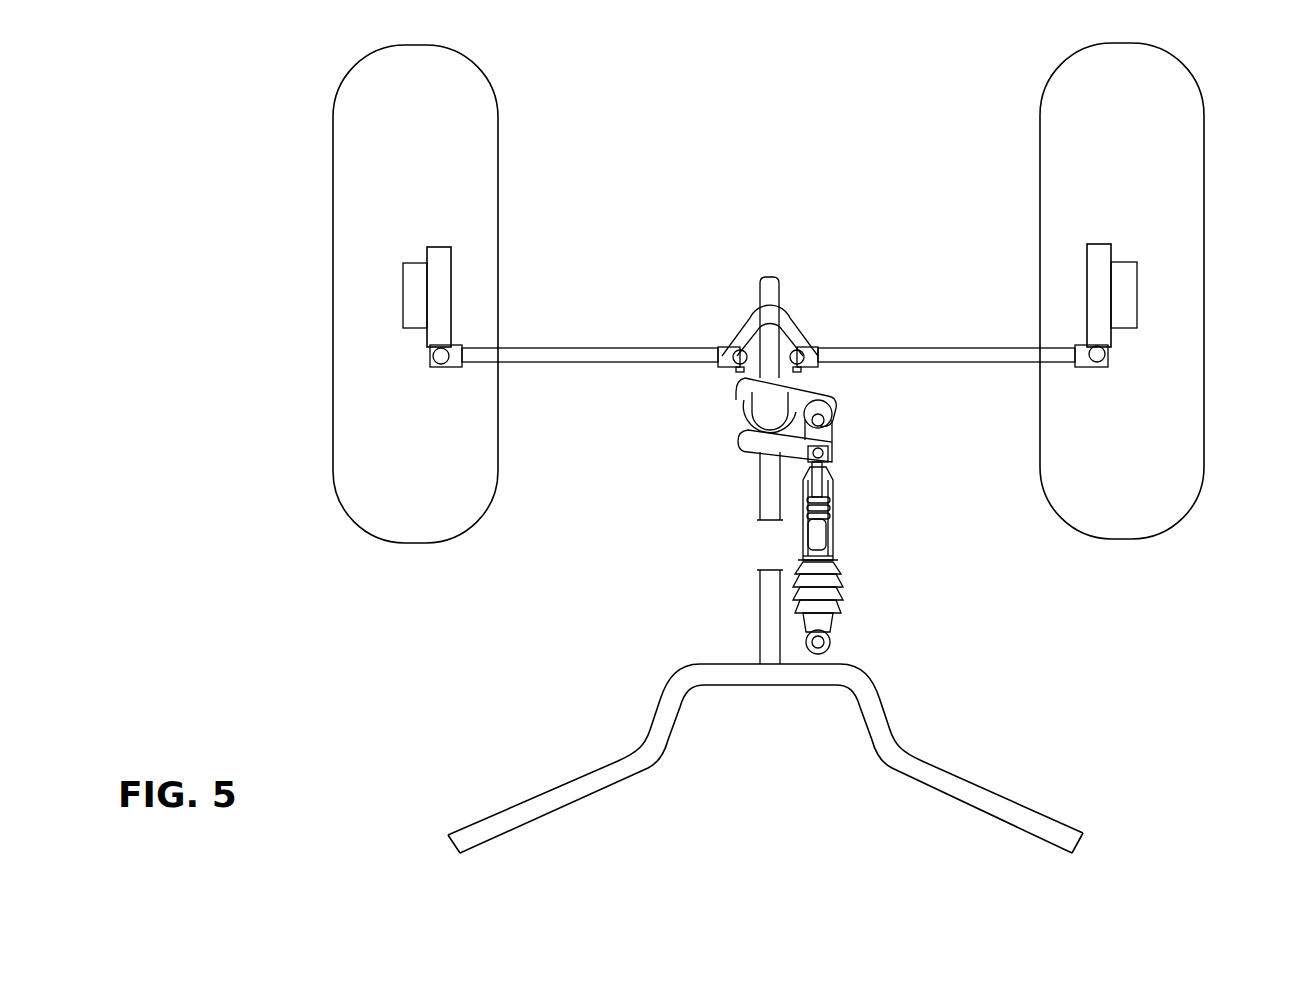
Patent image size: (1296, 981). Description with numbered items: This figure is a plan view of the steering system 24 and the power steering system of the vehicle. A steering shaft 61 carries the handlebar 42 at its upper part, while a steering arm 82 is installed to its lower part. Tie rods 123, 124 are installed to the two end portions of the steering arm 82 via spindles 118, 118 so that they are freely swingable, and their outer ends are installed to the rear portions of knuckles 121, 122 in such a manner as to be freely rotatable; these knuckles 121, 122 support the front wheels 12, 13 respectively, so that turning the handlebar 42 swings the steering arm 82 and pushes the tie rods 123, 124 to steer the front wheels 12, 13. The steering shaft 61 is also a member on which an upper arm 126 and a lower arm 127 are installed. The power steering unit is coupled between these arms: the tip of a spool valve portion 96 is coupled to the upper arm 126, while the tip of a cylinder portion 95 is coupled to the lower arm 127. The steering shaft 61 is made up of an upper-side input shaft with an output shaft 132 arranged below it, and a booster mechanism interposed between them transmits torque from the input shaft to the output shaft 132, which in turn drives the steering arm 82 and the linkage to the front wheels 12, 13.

The front wheel 12 is at (333, 170).
The front wheel 13 is at (1204, 230).
The knuckle 121 is at (451, 292).
The knuckle 122 is at (1085, 262).
The tie rod 123 is at (615, 347).
The tie rod 124 is at (940, 347).
The steering arm 82 is at (748, 318).
The output shaft 132 is at (780, 292).
The spindle 118 is at (800, 374).
The lower arm 127 is at (835, 396).
The upper arm 126 is at (833, 455).
The spool valve portion 96 is at (828, 532).
The cylinder portion 95 is at (835, 562).
The steering system 24 is at (755, 488).
The steering shaft 61 is at (757, 608).
The handlebar 42 is at (738, 687).